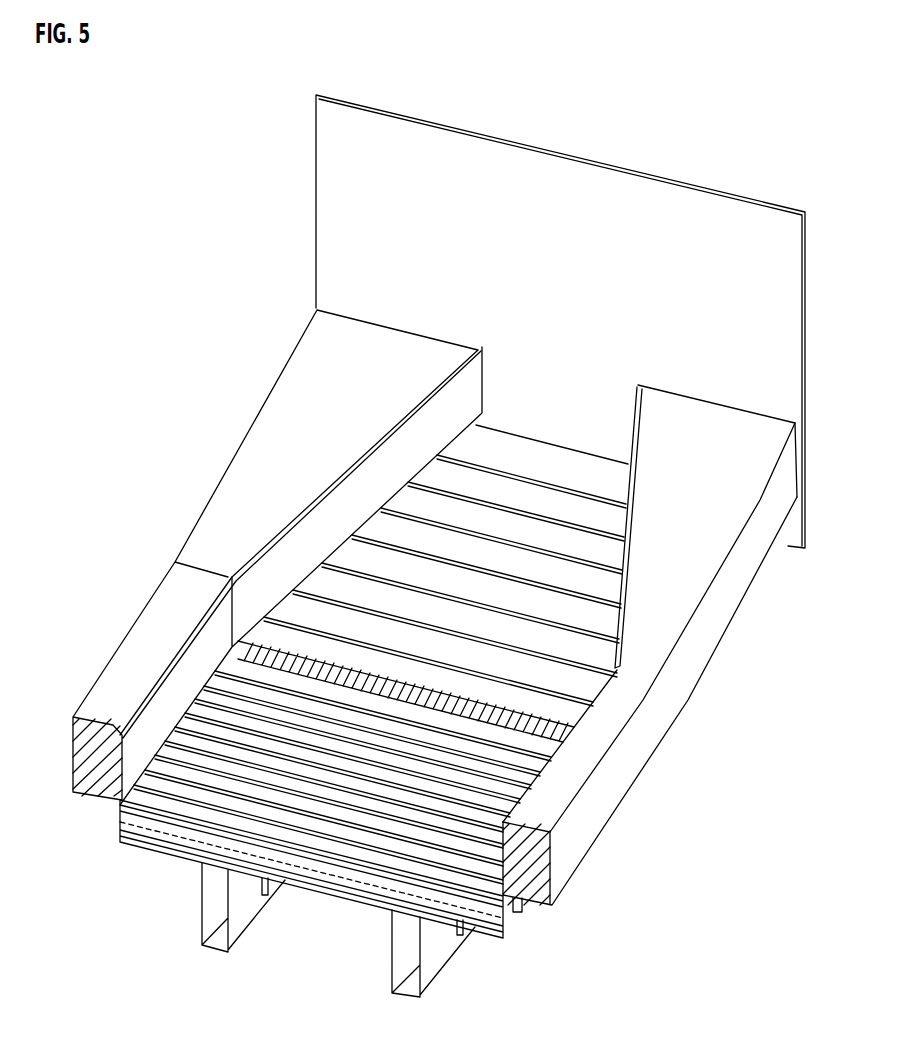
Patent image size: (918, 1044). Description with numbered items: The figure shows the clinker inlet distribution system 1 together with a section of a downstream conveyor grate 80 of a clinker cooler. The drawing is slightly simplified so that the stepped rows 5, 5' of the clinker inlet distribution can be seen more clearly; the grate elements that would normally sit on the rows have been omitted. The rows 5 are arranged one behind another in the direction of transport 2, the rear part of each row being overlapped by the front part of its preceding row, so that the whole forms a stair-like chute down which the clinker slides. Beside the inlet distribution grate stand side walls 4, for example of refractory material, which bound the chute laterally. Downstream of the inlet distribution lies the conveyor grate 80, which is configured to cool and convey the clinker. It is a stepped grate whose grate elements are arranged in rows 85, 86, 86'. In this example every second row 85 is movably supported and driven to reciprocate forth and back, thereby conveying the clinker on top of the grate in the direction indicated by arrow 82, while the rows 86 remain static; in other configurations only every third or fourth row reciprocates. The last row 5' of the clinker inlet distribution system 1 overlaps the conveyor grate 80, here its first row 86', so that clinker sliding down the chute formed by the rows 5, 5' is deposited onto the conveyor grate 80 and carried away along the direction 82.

The clinker inlet distribution system 1 is at (200, 320).
The direction of transport 2 is at (340, 784).
The side walls 4 is at (354, 522).
The rows 5 is at (529, 535).
The last row 5' is at (365, 613).
The conveyor grate 80 is at (116, 620).
The arrow 82 is at (215, 708).
The rows 85 is at (537, 748).
The rows 86 is at (659, 627).
The first row 86' is at (650, 603).